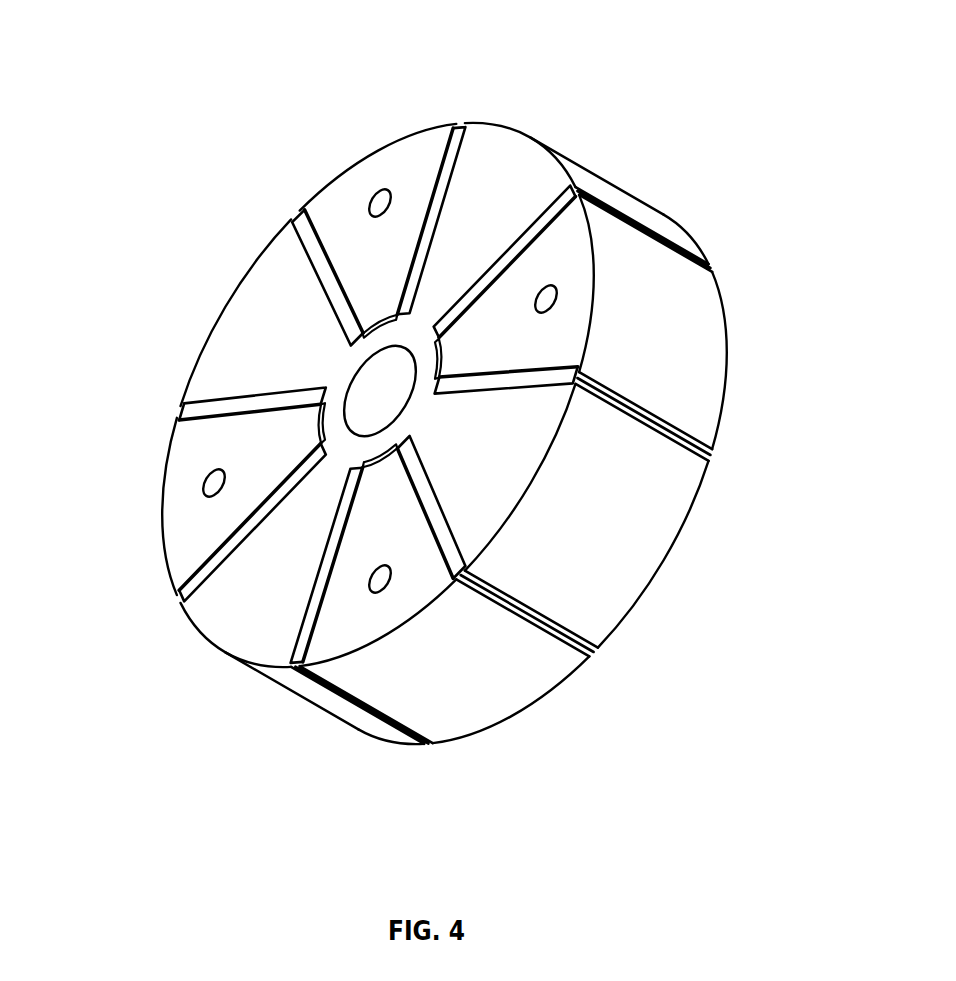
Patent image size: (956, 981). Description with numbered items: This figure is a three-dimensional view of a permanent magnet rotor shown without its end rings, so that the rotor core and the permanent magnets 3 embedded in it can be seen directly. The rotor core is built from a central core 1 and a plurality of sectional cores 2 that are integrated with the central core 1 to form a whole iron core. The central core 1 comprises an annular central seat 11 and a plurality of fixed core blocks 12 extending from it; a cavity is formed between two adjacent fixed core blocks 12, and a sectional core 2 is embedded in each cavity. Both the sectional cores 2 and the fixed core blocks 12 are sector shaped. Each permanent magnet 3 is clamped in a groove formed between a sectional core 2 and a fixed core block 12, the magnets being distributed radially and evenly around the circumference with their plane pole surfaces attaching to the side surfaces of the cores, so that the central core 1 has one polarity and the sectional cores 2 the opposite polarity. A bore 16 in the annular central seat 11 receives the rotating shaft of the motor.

The central core 1 is at (507, 440).
The sectional core 2 is at (578, 280).
The permanent magnet 3 is at (433, 211).
The annular central seat 11 is at (262, 328).
The fixed core block 12 is at (403, 333).
The bore 16 is at (383, 396).